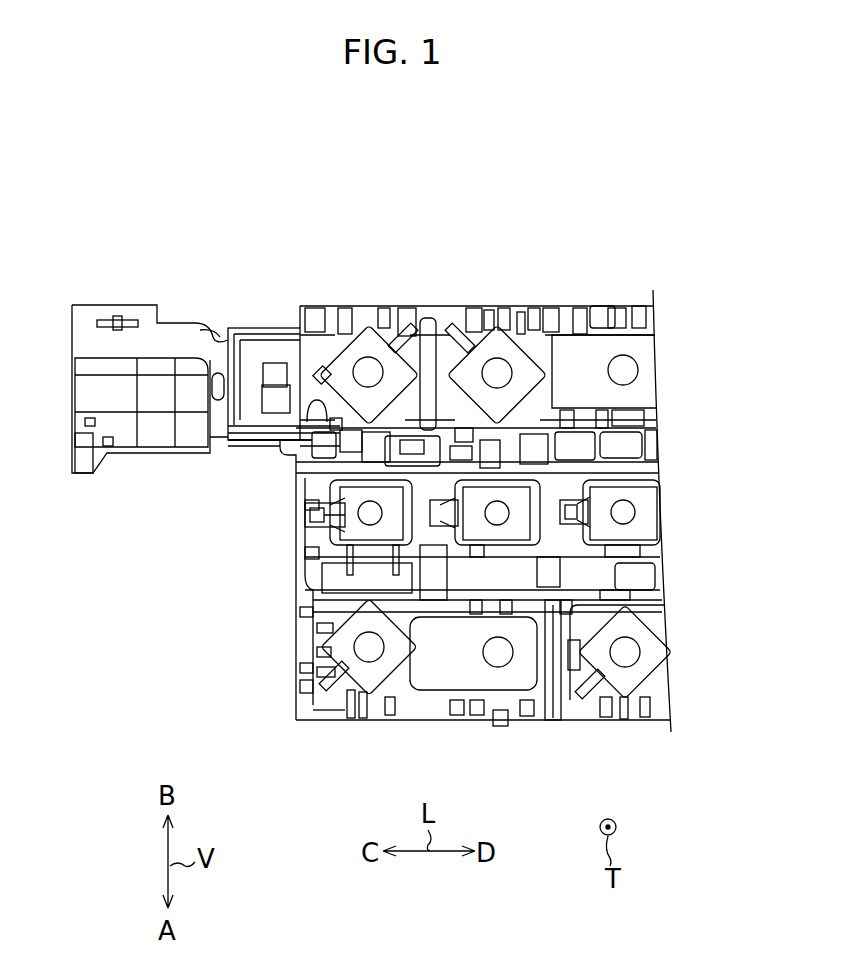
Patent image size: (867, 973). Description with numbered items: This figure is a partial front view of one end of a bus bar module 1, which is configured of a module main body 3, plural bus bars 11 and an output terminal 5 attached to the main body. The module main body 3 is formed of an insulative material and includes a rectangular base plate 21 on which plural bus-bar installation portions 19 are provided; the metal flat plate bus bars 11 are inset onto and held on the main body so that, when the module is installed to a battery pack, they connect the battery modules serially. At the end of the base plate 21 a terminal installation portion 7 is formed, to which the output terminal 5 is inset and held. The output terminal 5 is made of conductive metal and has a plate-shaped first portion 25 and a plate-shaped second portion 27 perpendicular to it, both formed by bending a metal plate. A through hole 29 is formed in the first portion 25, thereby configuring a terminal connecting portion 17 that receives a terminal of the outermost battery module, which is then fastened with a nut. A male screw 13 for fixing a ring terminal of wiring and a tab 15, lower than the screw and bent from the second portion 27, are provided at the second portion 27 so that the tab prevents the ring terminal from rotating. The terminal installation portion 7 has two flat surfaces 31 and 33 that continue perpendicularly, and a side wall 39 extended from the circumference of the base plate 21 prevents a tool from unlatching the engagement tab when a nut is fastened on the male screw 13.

The bus bar module 1 is at (421, 475).
The module main body 3 is at (392, 318).
The output terminal 5 is at (273, 405).
The terminal installation portion 7 is at (262, 348).
The bus bars 11 is at (661, 366).
The bus-bar installation portions 19 is at (603, 353).
The male screw 13 is at (271, 393).
The tab 15 is at (320, 400).
The terminal connecting portion 17 is at (368, 350).
The base plate 21 is at (590, 305).
The first portion 25 is at (282, 350).
The second portion 27 is at (295, 422).
The through hole 29 is at (372, 367).
The flat surface 31 is at (221, 333).
The flat surface 33 is at (325, 422).
The side wall 39 is at (327, 310).